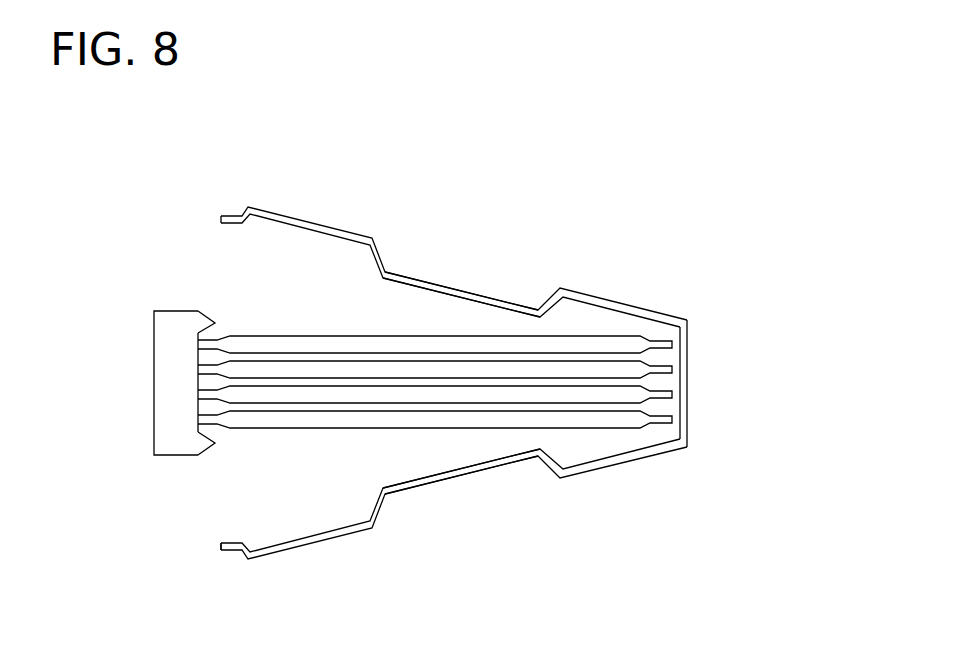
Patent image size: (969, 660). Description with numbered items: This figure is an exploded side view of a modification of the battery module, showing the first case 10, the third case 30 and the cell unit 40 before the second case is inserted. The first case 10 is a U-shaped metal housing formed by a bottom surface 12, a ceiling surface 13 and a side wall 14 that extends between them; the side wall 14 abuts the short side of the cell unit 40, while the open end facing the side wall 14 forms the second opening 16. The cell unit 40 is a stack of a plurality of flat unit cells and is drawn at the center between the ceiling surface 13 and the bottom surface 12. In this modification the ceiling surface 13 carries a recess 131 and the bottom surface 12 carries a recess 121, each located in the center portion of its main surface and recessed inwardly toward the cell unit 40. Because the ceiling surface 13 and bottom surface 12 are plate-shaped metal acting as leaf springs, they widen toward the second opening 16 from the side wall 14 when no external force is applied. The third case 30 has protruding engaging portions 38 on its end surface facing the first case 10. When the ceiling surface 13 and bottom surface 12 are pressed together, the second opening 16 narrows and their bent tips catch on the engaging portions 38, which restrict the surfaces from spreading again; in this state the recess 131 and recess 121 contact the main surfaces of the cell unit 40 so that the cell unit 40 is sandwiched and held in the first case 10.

The first case 10 is at (728, 186).
The bottom surface of first case 12 is at (625, 462).
The recess 121 is at (457, 481).
The ceiling surface of first case 13 is at (627, 304).
The recess 131 is at (457, 284).
The side wall 14 is at (688, 374).
The second opening portion 16 is at (212, 493).
The third case 30 is at (123, 418).
The engaging portion 38 is at (214, 322).
The cell unit 40 is at (245, 333).